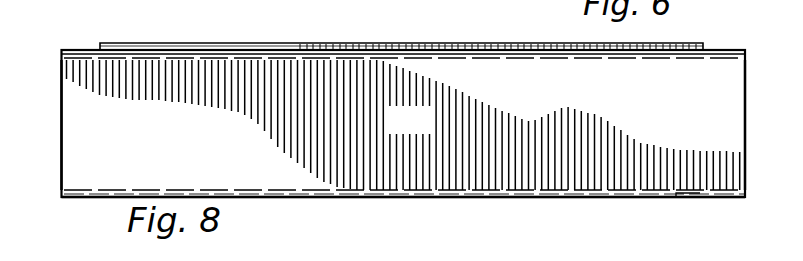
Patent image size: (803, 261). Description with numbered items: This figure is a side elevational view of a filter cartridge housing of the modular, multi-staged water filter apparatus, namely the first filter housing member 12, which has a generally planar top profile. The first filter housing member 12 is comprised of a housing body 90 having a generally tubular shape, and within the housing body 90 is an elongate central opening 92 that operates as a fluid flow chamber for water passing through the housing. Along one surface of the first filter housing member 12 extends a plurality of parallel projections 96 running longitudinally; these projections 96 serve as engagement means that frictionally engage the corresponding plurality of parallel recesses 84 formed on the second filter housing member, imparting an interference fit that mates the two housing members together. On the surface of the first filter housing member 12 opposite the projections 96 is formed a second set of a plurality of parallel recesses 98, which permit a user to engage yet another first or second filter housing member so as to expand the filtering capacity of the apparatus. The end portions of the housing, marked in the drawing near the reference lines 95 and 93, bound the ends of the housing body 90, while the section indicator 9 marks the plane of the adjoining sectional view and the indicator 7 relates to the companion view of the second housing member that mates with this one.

In FIG. 8, the first filter housing member 12 is at (143, 30).
In FIG. 8, the plurality of parallel projections 96 is at (204, 43).
In FIG. 8, the elongate central opening 92 is at (393, 140).
In FIG. 8, the left end wall 95 is at (61, 114).
In FIG. 8, the right end wall 93 is at (746, 131).
In FIG. 8, the housing body 90 is at (396, 198).
In FIG. 8, the second set of a plurality of parallel recesses 98 is at (678, 202).
In FIG. 8, the section line 9- 9 is at (499, 29).
In FIG. 6, the plurality of parallel recesses 84 is at (254, 1).
In FIG. 6, the section line 7-7 (FIG. 6) 7 is at (385, 4).